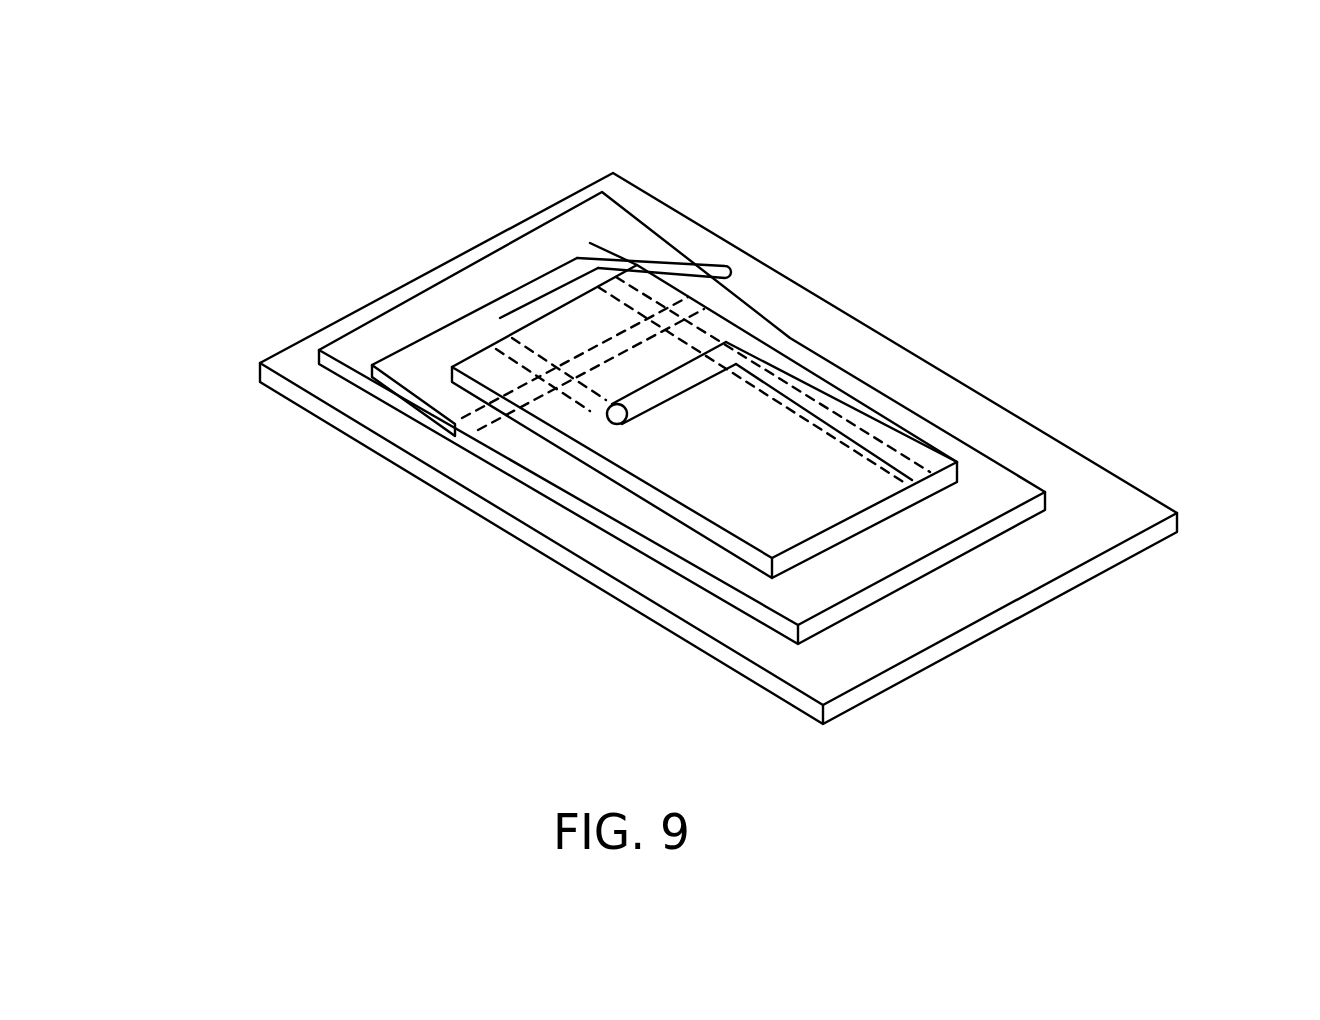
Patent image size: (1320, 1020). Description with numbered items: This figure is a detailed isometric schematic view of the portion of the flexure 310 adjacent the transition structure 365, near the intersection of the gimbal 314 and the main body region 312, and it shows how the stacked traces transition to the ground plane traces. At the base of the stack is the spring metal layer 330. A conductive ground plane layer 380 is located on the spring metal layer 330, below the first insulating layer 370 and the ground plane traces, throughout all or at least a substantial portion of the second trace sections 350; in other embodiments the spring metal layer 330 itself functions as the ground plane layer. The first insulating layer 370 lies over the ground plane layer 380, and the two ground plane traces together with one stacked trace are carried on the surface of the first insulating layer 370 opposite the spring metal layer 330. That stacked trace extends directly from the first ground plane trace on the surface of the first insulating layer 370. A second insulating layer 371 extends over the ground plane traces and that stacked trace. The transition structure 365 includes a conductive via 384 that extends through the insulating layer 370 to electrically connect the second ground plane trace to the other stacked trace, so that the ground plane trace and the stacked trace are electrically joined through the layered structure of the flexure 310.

The flexure 310 is at (927, 209).
The main body region 312 is at (1114, 427).
The gimbal 314 is at (626, 158).
The spring metal layer 330 is at (1128, 482).
The first insulating layer 370 is at (767, 622).
The second insulating layer 371 is at (465, 388).
The conductive ground plane layer 380 is at (697, 267).
The second trace sections 350 is at (445, 325).
The transition structure 365 is at (658, 435).
The conductive via 384 is at (610, 415).